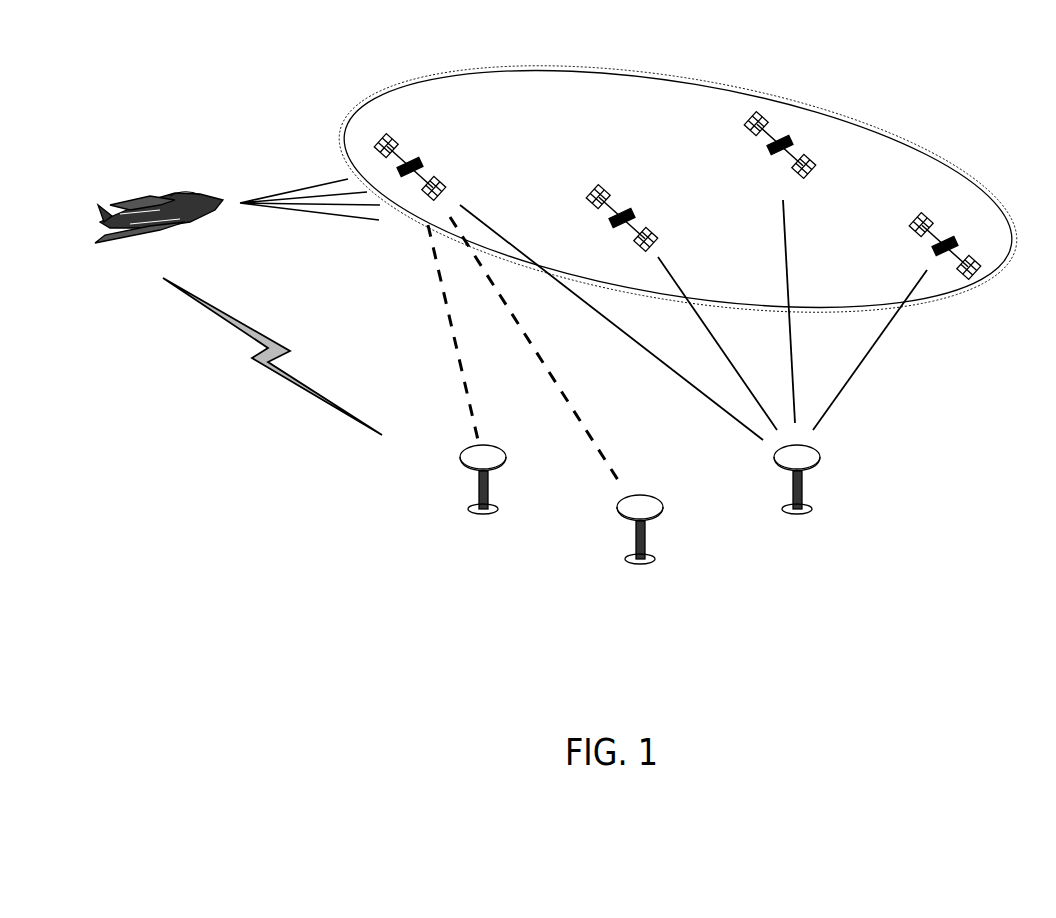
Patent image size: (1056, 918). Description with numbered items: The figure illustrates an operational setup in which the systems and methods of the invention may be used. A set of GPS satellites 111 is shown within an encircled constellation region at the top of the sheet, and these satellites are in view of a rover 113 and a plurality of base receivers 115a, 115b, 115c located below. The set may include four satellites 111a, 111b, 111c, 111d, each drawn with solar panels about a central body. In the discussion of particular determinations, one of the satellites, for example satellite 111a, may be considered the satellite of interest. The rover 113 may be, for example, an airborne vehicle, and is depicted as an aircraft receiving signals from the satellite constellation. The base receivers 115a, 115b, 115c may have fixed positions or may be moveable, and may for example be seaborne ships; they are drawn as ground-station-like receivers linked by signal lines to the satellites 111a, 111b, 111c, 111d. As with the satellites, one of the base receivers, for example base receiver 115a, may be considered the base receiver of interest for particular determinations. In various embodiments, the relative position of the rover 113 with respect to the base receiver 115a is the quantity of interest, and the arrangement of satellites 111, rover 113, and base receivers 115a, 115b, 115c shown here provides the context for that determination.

The set of GPS satellites 111 is at (893, 147).
The satellite 111a is at (397, 142).
The satellite 111b is at (607, 185).
The satellite 111c is at (793, 170).
The satellite 111d is at (923, 230).
The rover 113 is at (145, 203).
The base receiver 115a is at (790, 495).
The base receiver 115b is at (633, 542).
The base receiver 115c is at (480, 482).